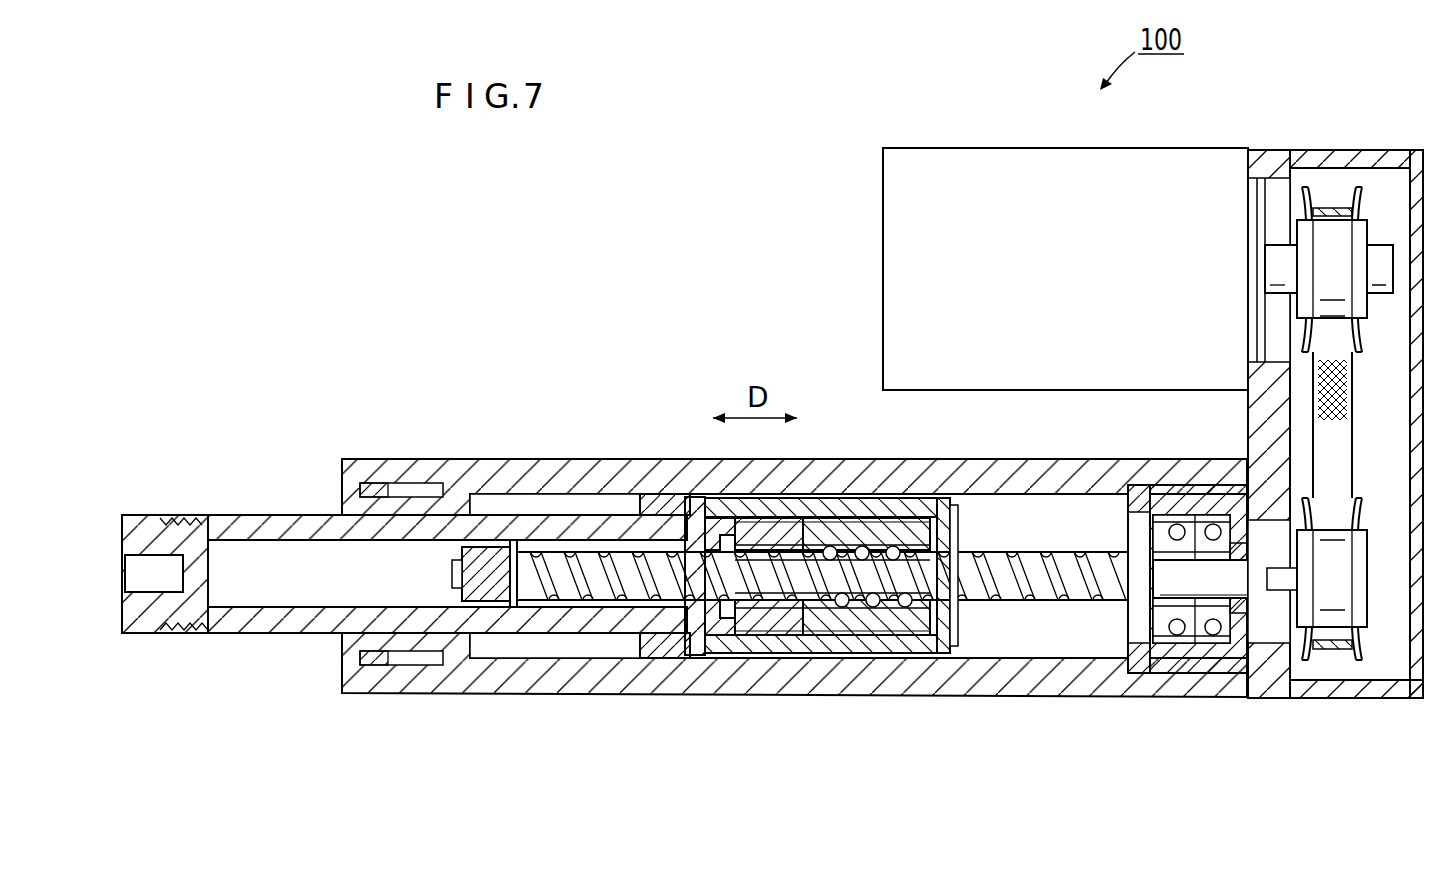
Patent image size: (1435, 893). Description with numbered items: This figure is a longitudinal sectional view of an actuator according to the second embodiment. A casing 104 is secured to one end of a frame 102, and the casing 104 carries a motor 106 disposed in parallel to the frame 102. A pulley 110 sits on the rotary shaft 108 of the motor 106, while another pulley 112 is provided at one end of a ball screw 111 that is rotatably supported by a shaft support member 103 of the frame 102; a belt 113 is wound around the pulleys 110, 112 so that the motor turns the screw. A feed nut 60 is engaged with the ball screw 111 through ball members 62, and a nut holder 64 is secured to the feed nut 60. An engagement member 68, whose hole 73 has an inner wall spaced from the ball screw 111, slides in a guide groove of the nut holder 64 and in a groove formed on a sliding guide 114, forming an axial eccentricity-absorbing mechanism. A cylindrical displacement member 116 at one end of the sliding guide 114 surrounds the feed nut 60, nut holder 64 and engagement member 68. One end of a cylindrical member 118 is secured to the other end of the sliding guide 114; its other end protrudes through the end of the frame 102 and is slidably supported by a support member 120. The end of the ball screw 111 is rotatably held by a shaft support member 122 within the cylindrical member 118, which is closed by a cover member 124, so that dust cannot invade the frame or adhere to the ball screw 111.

The feed nut 60 is at (845, 607).
The ball members 62 is at (897, 608).
The nut holder 64 is at (763, 622).
The engagement member 68 is at (718, 636).
The hole 73 is at (693, 505).
The frame 102 is at (1048, 684).
The shaft support member 103 is at (1195, 662).
The casing 104 is at (1355, 698).
The motor 106 is at (990, 178).
The rotary shaft 108 is at (1278, 258).
The pulley 110 is at (1365, 187).
The ball screw 111 is at (1017, 588).
The pulley 112 is at (1317, 653).
The belt 113 is at (1315, 387).
The sliding guide 114 is at (660, 633).
The cylindrical displacement member 116 is at (822, 648).
The cylindrical member 118 is at (540, 625).
The support member 120 is at (408, 490).
The shaft support member 122 is at (487, 540).
The cover member 124 is at (180, 600).